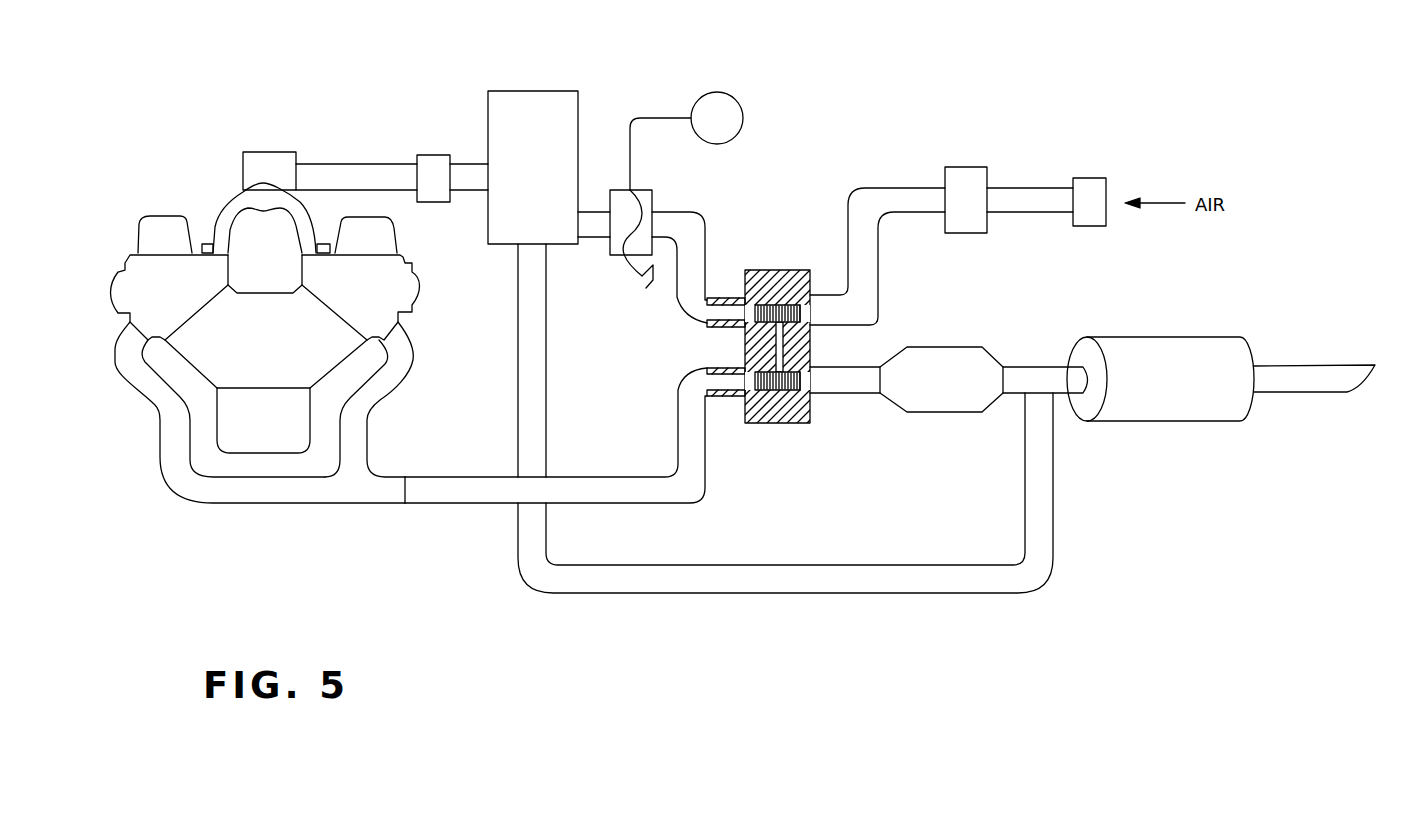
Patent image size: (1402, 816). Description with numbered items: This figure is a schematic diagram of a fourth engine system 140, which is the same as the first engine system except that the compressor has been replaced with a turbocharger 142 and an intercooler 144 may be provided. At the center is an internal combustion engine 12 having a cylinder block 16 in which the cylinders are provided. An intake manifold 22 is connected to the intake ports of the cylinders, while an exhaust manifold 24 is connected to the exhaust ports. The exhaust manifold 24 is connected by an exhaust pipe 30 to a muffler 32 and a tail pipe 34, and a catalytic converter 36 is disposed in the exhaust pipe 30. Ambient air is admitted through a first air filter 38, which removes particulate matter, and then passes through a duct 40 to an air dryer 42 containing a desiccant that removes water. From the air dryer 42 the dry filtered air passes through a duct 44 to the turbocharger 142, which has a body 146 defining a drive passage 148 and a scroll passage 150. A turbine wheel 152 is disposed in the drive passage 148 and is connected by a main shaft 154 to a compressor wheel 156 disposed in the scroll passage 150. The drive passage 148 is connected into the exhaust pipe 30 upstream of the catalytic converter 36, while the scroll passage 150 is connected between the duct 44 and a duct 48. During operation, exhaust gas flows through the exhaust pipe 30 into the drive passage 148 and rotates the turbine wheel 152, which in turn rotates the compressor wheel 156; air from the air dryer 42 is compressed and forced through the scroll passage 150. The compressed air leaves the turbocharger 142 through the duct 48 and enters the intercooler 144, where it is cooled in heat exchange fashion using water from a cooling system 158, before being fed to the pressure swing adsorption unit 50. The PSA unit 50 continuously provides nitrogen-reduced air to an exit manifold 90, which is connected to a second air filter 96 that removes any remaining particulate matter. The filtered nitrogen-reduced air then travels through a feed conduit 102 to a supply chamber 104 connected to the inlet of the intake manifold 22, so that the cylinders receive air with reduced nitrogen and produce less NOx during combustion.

The internal combustion engine 12 is at (150, 440).
The cylinder block 16 is at (283, 347).
The intake manifold 22 is at (233, 203).
The exhaust manifold 24 is at (262, 492).
The exhaust pipe 30 is at (608, 490).
The muffler 32 is at (1147, 352).
The tail pipe 34 is at (1308, 372).
The catalytic converter 36 is at (957, 357).
The first air filter 38 is at (1093, 185).
The duct 40 is at (1025, 197).
The air dryer 42 is at (970, 175).
The duct 44 is at (872, 192).
The duct 48 is at (700, 267).
The pressure swing adsorption unit 50 is at (522, 102).
The exit manifold 90 is at (468, 170).
The second air filter 96 is at (430, 165).
The feed conduit 102 is at (350, 170).
The supply chamber 104 is at (270, 152).
The fourth engine system 140 is at (872, 120).
The turbocharger 142 is at (780, 351).
The intercooler 144 is at (648, 203).
The body 146 is at (750, 356).
The drive passage 148 is at (750, 378).
The scroll passage 150 is at (750, 317).
The turbine wheel 152 is at (780, 378).
The main shaft 154 is at (780, 340).
The compressor wheel 156 is at (800, 317).
The cooling system 158 is at (686, 141).